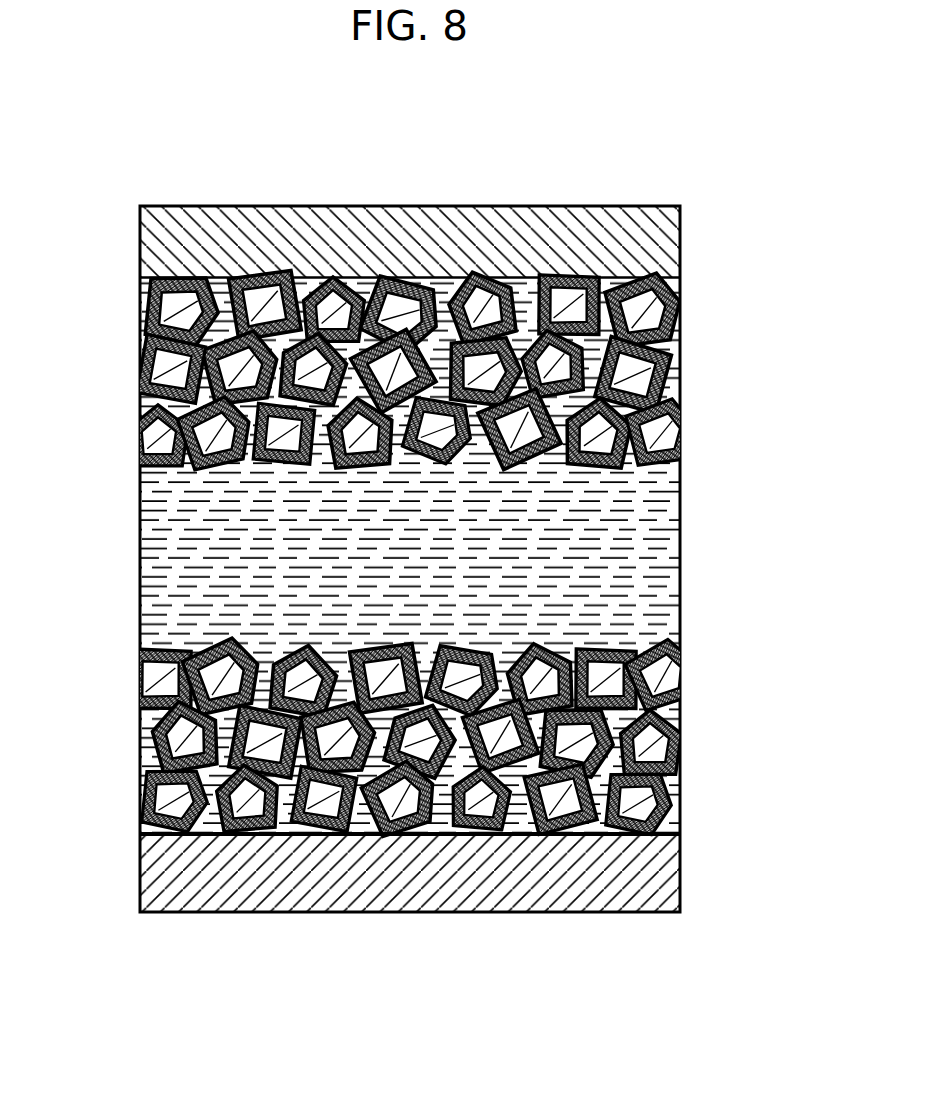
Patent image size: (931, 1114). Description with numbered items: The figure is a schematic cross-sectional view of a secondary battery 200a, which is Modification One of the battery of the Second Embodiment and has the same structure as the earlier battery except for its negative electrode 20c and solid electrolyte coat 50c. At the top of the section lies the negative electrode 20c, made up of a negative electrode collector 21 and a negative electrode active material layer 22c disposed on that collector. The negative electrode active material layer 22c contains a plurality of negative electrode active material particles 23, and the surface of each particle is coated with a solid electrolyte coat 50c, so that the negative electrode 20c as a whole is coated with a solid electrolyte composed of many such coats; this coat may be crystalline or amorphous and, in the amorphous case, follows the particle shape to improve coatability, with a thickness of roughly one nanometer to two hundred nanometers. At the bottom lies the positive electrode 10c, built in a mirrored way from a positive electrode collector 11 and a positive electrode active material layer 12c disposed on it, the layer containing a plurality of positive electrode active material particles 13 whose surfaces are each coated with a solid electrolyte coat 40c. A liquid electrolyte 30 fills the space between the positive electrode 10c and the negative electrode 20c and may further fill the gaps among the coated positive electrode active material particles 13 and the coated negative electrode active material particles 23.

The secondary battery 200a is at (694, 173).
The negative electrode 20c is at (437, 520).
The negative electrode collector 21 is at (650, 247).
The negative electrode active material layer 22c is at (404, 368).
The negative electrode active material particles 23 is at (162, 370).
The solid electrolyte coat 50c is at (142, 345).
The liquid electrolyte 30 is at (650, 546).
The positive electrode 10c is at (448, 772).
The positive electrode collector 11 is at (448, 873).
The positive electrode active material layer 12c is at (415, 753).
The positive electrode active material particles 13 is at (173, 798).
The solid electrolyte coat 40c is at (152, 825).